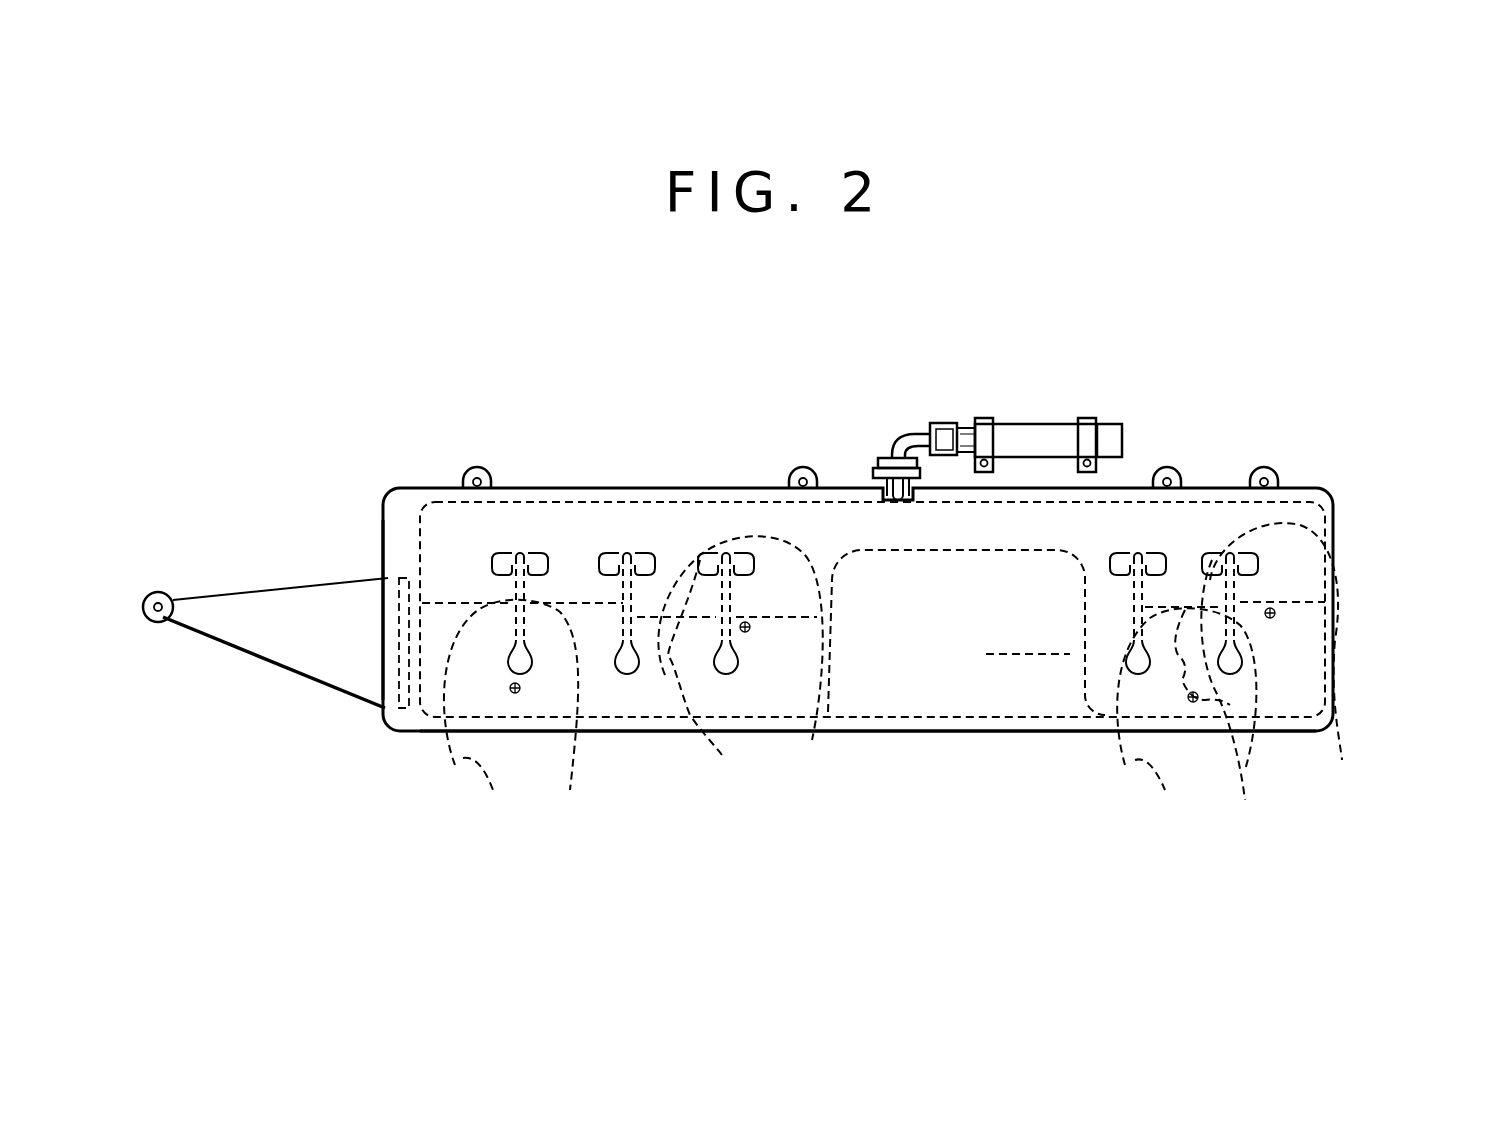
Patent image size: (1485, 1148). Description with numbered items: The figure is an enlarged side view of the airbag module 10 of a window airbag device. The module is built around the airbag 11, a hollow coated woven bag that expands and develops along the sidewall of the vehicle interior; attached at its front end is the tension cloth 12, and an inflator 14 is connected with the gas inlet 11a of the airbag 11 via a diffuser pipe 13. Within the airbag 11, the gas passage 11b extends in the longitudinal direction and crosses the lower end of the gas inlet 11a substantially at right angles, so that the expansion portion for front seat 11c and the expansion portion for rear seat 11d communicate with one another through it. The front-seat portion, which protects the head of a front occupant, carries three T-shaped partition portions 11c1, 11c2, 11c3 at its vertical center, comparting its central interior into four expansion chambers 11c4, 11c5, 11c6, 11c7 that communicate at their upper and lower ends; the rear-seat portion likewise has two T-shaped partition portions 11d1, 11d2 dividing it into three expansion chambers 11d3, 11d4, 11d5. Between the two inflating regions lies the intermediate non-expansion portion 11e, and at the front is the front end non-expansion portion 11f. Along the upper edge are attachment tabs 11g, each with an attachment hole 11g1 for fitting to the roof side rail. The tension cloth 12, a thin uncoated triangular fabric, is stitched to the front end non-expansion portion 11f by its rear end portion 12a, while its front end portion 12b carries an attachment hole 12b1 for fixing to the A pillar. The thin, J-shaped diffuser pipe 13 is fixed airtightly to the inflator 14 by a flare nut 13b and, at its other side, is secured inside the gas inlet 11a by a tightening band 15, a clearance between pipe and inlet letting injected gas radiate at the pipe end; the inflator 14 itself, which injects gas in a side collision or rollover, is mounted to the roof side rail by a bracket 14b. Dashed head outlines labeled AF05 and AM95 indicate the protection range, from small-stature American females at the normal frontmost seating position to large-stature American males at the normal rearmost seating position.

The airbag module 10 is at (614, 436).
The airbag 11 is at (870, 732).
The gas inlet 11a is at (877, 485).
The gas passage 11b is at (961, 535).
The expansion portion for front seat 11c is at (637, 718).
The T-shaped partition portion 11c1 is at (519, 553).
The T-shaped partition portion 11c2 is at (614, 552).
The T-shaped partition portion 11c3 is at (729, 552).
The expansion chamber 11c4 is at (465, 593).
The expansion chamber 11c5 is at (576, 593).
The expansion chamber 11c6 is at (675, 607).
The expansion chamber 11c7 is at (775, 611).
The expansion portion for rear seat 11d is at (1292, 738).
The T-shaped partition portion 11d1 is at (1123, 550).
The T-shaped partition portion 11d2 is at (1212, 552).
The expansion chamber 11d3 is at (1087, 597).
The expansion chamber 11d4 is at (1184, 593).
The expansion chamber 11d5 is at (1282, 594).
The intermediate non-expansion portion 11e is at (995, 708).
The front end non-expansion portion 11f is at (397, 521).
The attachment tab 11g is at (486, 469).
The attachment hole 11g1 is at (466, 481).
The tension cloth 12 is at (251, 657).
The rear end portion 12a is at (383, 727).
The front end portion 12b is at (163, 620).
The attachment hole 12b1 is at (166, 593).
The diffuser pipe 13 is at (913, 436).
The flare nut 13b is at (943, 423).
The inflator 14 is at (1046, 428).
The bracket 14b is at (986, 418).
The tightening band 15 is at (872, 477).
The American male of large stature AM95 is at (828, 680).
The American female of small stature AF05 is at (470, 770).